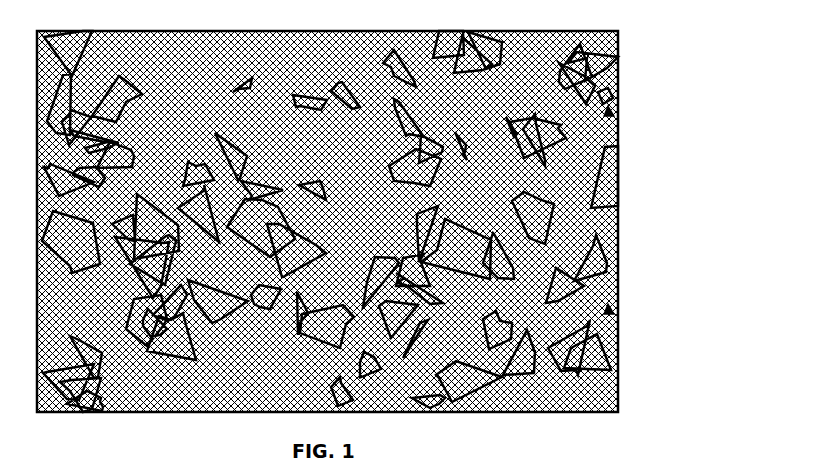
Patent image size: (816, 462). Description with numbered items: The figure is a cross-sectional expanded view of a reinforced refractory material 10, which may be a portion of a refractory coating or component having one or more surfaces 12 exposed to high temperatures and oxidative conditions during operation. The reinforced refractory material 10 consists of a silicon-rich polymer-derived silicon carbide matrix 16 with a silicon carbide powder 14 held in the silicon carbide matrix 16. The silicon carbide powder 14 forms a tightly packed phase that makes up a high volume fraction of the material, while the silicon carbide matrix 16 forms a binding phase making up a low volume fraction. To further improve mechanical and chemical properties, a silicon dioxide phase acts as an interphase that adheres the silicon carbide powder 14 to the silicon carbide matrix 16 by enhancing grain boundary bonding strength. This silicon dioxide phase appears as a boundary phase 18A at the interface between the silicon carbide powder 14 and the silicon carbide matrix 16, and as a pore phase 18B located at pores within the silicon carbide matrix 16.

The reinforced refractory material 10 is at (712, 66).
The surface 12 is at (621, 243).
The silicon carbide powder 14 is at (612, 178).
The silicon carbide matrix 16 is at (612, 96).
The boundary phase 18A is at (616, 314).
The pore phase 18B is at (616, 112).